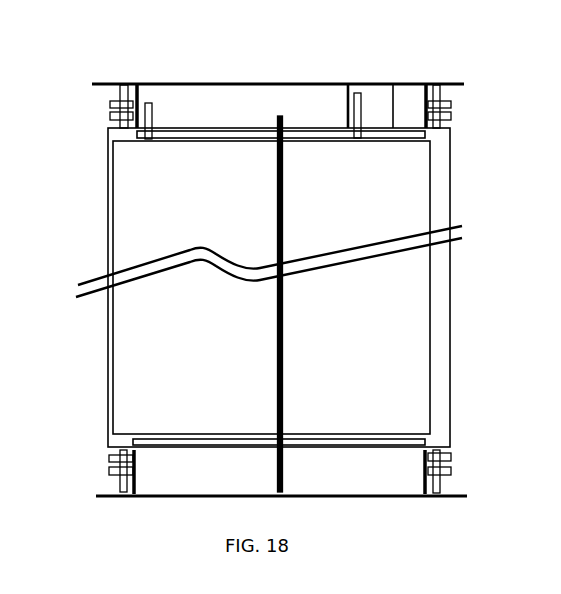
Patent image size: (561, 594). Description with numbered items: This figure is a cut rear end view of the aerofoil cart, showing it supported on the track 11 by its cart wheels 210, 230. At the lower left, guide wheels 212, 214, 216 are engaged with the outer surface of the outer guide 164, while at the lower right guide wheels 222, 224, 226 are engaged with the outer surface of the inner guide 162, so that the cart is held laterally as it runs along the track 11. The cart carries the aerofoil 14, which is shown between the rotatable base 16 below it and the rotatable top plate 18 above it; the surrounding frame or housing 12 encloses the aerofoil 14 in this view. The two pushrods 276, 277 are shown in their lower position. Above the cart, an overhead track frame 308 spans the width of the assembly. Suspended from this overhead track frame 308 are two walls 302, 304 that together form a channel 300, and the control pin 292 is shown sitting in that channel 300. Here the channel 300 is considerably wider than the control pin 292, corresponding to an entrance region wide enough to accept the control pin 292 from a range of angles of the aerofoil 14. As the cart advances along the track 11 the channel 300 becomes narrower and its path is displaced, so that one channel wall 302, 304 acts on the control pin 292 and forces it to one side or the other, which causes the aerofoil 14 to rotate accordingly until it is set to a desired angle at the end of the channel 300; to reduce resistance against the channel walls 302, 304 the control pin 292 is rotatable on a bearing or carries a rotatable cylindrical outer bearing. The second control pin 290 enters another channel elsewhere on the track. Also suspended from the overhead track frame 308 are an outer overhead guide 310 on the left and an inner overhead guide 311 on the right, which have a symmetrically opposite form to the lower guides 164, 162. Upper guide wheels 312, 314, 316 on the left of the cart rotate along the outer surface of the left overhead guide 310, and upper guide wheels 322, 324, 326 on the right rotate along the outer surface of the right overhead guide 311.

The track 11 is at (168, 497).
The outer frame 12 is at (452, 330).
The aerofoil 14 is at (432, 302).
The rotatable base 16 is at (427, 443).
The rotatable top plate 18 is at (430, 137).
The inner guide 162 is at (422, 484).
The outer guide 164 is at (135, 485).
The cart wheel 210 is at (90, 456).
The guide wheel 212 is at (90, 456).
The guide wheel 214 is at (90, 456).
The guide wheel 216 is at (118, 483).
The guide wheel 222 is at (494, 463).
The guide wheel 224 is at (494, 463).
The guide wheel 226 is at (494, 463).
The cart wheel 230 is at (452, 458).
The pushrod 276 is at (330, 304).
The pushrod 277 is at (283, 345).
The control pin 290 is at (155, 118).
The control pin 292 is at (353, 70).
The channel 300 is at (370, 96).
The channel wall 302 is at (318, 91).
The channel wall 304 is at (393, 110).
The overhead track frame 308 is at (177, 82).
The outer overhead guide 310 is at (150, 66).
The inner overhead guide 311 is at (427, 92).
The upper guide wheel 312 is at (90, 124).
The upper guide wheel 314 is at (90, 124).
The upper guide wheel 316 is at (109, 106).
The upper guide wheel 322 is at (473, 122).
The upper guide wheel 324 is at (473, 122).
The upper guide wheel 326 is at (452, 103).